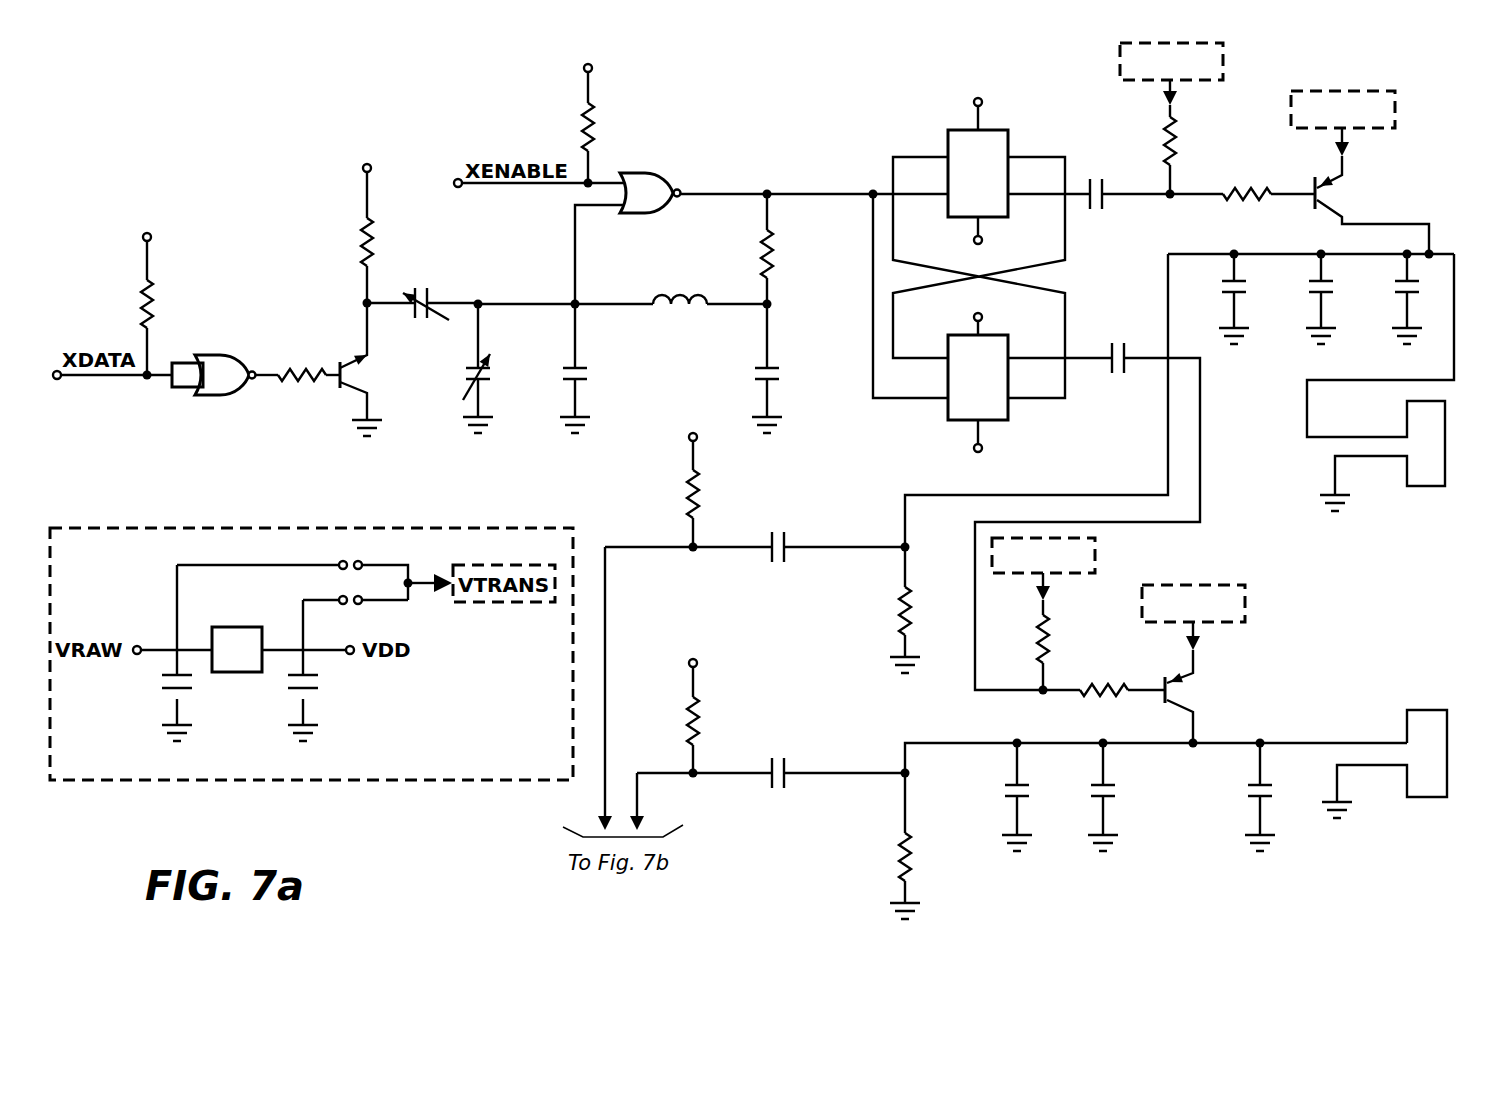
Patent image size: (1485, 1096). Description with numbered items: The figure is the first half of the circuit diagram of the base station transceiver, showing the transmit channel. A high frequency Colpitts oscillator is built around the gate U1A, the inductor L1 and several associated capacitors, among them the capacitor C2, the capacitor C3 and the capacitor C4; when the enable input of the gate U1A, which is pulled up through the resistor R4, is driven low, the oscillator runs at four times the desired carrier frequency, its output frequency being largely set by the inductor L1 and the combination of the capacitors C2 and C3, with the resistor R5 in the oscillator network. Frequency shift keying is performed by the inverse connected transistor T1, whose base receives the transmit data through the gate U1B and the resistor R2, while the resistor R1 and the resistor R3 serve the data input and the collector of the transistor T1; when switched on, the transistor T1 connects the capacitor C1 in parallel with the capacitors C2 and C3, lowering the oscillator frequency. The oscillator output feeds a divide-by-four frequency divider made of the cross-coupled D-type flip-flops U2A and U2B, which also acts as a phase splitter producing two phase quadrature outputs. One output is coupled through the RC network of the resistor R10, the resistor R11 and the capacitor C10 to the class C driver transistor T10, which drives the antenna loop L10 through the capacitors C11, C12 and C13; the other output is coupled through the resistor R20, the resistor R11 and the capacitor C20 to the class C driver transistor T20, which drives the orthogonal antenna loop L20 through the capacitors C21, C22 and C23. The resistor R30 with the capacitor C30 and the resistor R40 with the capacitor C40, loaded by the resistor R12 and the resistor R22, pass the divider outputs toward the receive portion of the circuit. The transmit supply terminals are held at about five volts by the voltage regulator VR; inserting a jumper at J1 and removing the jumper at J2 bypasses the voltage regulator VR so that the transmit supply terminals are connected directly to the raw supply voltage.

The resistor R1 is at (156, 294).
The 1K base resistor R2 is at (309, 376).
The 12K resistor R3 is at (353, 223).
The 1M pull-up resistor R4 is at (575, 115).
The 100 ohm resistor R5 is at (793, 249).
The resistor of RC network R10 is at (1171, 121).
The resistor of RC network R11 is at (1179, 443).
The 300 ohm resistor R12 is at (908, 610).
The 1K resistor R20 is at (1043, 616).
The 300 ohm resistor R22 is at (908, 846).
The 8.2K resistor R30 is at (676, 480).
The 8.2K resistor R40 is at (675, 707).
The capacitor C1 is at (422, 304).
The capacitor C2 is at (503, 367).
The capacitor C3 is at (565, 367).
The 150P capacitor C4 is at (794, 368).
The capacitor of RC network C10 is at (1089, 195).
The capacitor C11 is at (1214, 297).
The capacitor C12 is at (1300, 297).
The capacitor C13 is at (1385, 297).
The capacitor of RC network C20 is at (1087, 504).
The capacitor C21 is at (995, 795).
The capacitor C22 is at (1081, 795).
The capacitor C23 is at (1239, 795).
The 0.01UF capacitor C30 is at (757, 548).
The 0.01UF capacitor C40 is at (773, 774).
The inductor L1 is at (707, 293).
The antenna loop L10 is at (1380, 387).
The antenna loop L20 is at (1385, 768).
The inverse connected transistor T1 is at (370, 369).
The class C driver transistor T10 is at (1360, 172).
The class C driver transistor T20 is at (1193, 666).
The gate U1A is at (761, 226).
The gate U1B is at (225, 361).
The D-type flip-flop U2A is at (967, 236).
The D-type flip-flop U2B is at (980, 382).
The voltage regulator VR is at (237, 649).
The jumper J1 is at (362, 553).
The jumper J2 is at (355, 614).